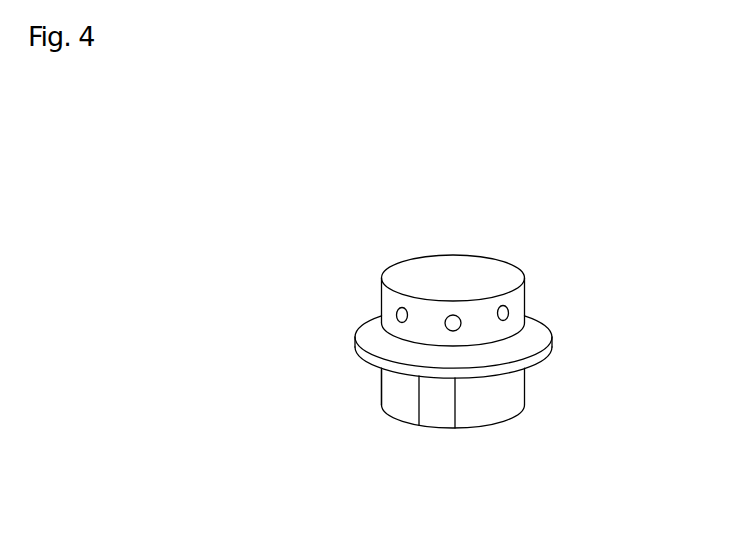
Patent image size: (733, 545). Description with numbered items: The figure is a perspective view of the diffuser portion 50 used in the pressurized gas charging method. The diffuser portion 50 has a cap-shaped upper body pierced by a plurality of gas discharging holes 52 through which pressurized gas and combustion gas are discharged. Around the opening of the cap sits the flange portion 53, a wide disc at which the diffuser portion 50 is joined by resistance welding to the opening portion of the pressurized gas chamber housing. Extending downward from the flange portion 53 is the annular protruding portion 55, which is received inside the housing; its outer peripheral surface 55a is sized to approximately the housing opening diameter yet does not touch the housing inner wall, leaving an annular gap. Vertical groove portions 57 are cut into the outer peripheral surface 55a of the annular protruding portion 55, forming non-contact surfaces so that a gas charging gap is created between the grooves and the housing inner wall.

The diffuser portion 50 is at (454, 326).
The gas discharging holes 52 is at (508, 316).
The flange portion 53 is at (530, 358).
The annular protruding portion 55 is at (419, 436).
The outer peripheral surface 55a is at (395, 397).
The slot 57 is at (438, 412).